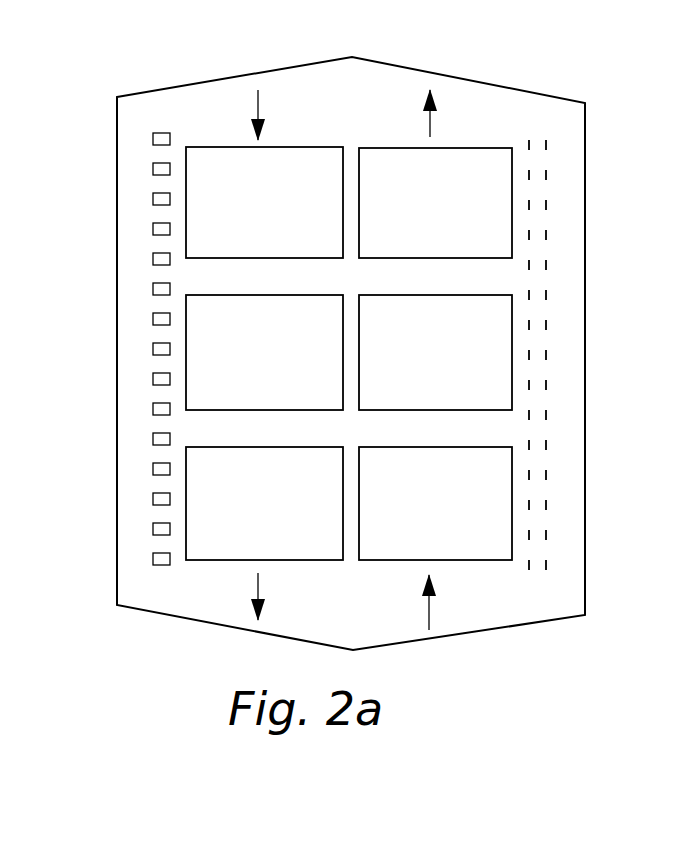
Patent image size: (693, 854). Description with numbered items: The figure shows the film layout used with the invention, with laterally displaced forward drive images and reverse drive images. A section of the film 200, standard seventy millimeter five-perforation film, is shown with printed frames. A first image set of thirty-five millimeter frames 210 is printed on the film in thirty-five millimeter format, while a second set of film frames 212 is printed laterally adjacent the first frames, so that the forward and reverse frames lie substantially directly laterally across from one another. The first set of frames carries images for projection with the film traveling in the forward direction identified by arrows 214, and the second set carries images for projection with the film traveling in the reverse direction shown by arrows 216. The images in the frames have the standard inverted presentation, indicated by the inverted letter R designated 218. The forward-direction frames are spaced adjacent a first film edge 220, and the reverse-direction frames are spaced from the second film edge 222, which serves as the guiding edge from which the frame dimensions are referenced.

The film 200 is at (549, 113).
The first image set of frames 210 is at (216, 140).
The second set of film frames 212 is at (456, 140).
The forward direction arrows 214 is at (262, 108).
The reverse direction arrows 216 is at (430, 610).
The inverted image designation "R" 218 is at (208, 173).
The first film edge 220 is at (117, 473).
The second film edge 222 is at (588, 437).